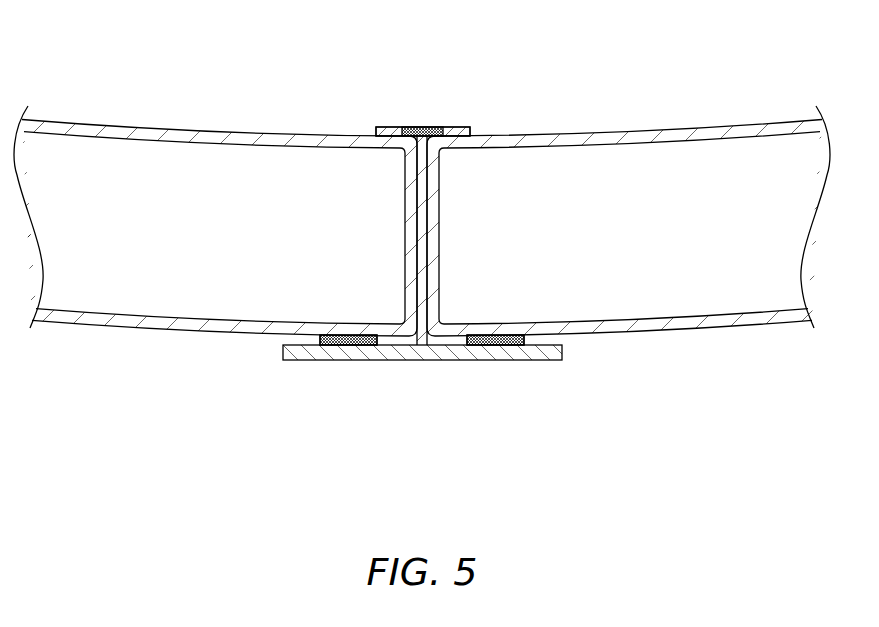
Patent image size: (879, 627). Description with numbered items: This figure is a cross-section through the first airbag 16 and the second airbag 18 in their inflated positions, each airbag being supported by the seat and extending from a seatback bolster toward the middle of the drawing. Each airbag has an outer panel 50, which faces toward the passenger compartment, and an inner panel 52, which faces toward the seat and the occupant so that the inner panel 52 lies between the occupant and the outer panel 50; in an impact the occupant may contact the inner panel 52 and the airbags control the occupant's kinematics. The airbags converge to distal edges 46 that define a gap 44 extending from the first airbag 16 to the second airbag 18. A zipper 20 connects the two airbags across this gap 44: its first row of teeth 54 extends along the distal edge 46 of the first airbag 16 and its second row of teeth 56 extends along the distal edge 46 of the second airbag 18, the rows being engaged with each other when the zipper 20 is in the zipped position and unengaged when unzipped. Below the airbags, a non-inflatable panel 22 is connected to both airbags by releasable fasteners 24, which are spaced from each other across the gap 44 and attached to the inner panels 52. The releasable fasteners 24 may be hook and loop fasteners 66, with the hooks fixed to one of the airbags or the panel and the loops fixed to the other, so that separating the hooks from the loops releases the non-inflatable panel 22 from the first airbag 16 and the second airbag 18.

The first airbag 16 is at (173, 165).
The second airbag 18 is at (657, 173).
The zipper 20 is at (459, 128).
The non-inflatable panel 22 is at (553, 362).
The releasable fastener 24 is at (311, 339).
The gap 44 is at (418, 282).
The distal edge 46 is at (422, 208).
The outer panel 50 is at (265, 138).
The inner panel 52 is at (150, 318).
The first row of teeth 54 is at (408, 127).
The second row of teeth 56 is at (427, 127).
The hook and loop fasteners 66 is at (377, 343).